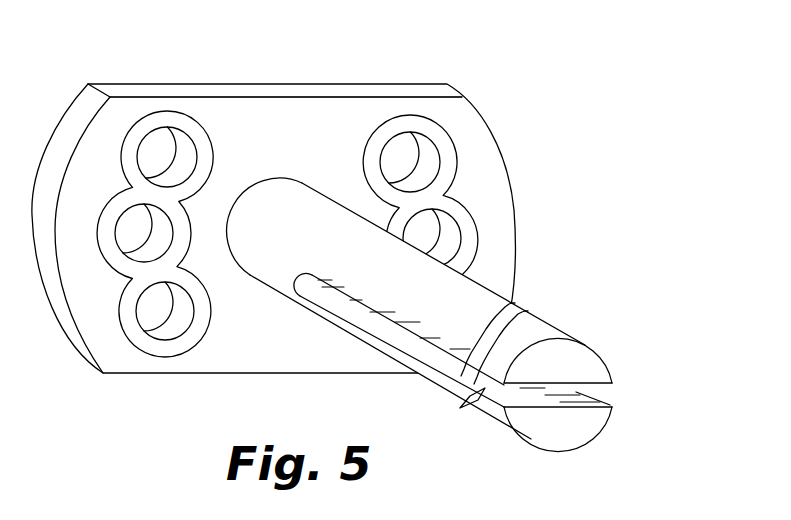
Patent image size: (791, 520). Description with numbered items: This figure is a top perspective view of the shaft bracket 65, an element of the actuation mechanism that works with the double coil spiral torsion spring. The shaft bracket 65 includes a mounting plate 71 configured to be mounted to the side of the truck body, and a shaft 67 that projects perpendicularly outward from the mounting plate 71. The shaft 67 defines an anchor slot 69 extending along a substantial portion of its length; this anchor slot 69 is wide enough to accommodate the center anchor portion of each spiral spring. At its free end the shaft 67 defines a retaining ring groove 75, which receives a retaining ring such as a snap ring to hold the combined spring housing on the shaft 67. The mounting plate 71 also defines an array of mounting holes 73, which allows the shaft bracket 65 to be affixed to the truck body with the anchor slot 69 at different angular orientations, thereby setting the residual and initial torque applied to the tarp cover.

The shaft bracket 65 is at (518, 207).
The shaft 67 is at (508, 300).
The anchor slot 69 is at (350, 334).
The mounting plate 71 is at (300, 126).
The mounting holes 73 is at (202, 126).
The retaining ring groove 75 is at (482, 389).